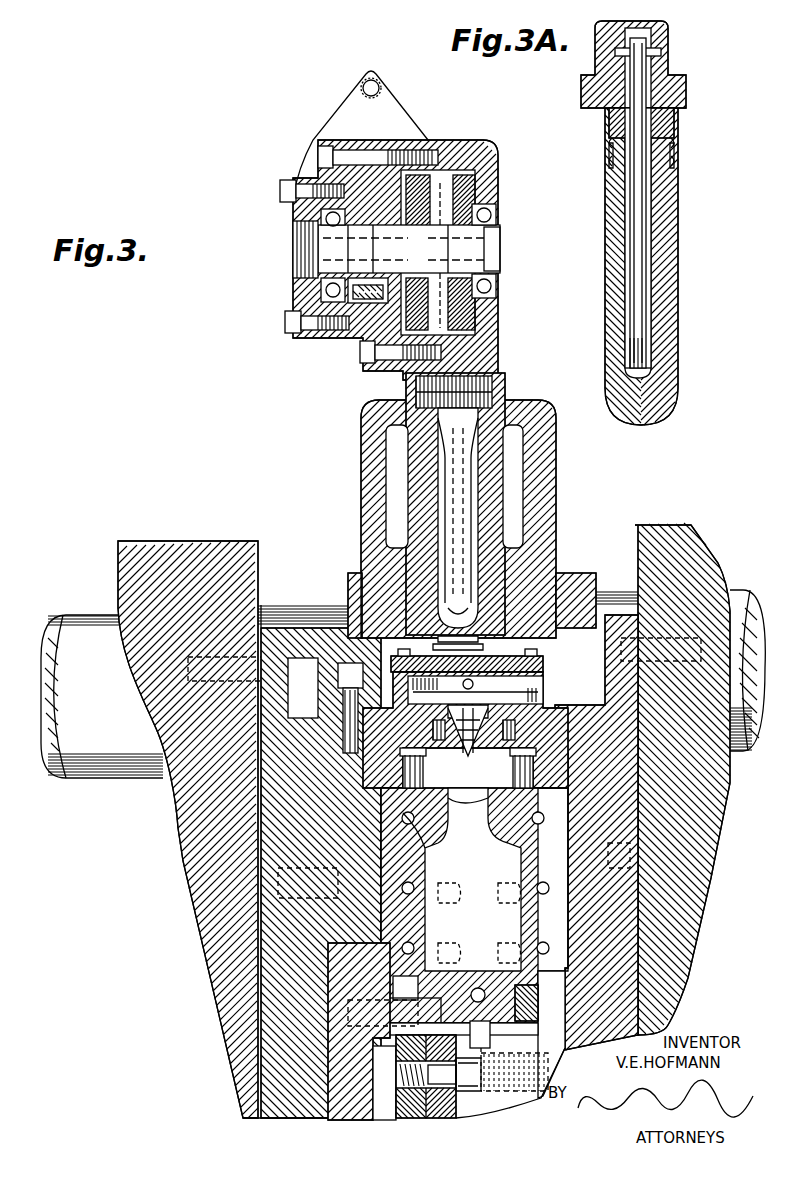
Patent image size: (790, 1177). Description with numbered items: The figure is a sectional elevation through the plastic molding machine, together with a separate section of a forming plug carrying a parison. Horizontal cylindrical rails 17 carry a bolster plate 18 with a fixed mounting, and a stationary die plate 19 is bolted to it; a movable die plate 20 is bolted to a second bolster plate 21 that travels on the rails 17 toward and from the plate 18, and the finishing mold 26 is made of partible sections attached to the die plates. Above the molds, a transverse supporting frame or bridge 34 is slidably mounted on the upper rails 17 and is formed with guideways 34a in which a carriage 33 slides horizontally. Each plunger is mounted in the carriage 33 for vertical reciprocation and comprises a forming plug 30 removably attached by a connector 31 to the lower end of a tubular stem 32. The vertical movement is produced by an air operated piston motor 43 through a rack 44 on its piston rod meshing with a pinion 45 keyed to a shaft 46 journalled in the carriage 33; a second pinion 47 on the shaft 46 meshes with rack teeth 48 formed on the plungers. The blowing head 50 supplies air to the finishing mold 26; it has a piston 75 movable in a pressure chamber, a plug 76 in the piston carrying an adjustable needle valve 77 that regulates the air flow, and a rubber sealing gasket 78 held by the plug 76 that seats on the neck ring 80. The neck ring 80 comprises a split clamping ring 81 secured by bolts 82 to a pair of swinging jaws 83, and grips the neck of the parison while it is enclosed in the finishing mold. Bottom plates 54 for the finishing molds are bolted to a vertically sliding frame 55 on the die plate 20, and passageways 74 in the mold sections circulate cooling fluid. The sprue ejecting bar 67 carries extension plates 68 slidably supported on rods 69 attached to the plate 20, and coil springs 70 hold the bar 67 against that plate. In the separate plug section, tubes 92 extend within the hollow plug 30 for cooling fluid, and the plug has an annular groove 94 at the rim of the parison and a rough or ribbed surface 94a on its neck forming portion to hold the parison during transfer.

In FIG. 3, the horizontal cylindrical rails 17 is at (72, 625).
In FIG. 3, the bolster plate 18 is at (700, 866).
In FIG. 3, the stationary die plate 19 is at (623, 817).
In FIG. 3, the movable die plate 20 is at (285, 805).
In FIG. 3, the bolster plate 21 is at (180, 790).
In FIG. 3, the finishing mold 26 is at (412, 910).
In FIG. 3, the forming plug 30 is at (450, 608).
In FIG. 3A, the forming plug 30 is at (648, 245).
In FIG. 3A, the connector 31 is at (652, 26).
In FIG. 3, the tubular stem 32 is at (492, 375).
In FIG. 3, the carriage 33 is at (440, 138).
In FIG. 3, the transverse supporting frame 34 is at (490, 519).
In FIG. 3, the guideways 34a is at (550, 585).
In FIG. 3, the air operated piston motor 43 is at (292, 155).
In FIG. 3, the rack 44 is at (335, 200).
In FIG. 3, the pinion 45 is at (358, 292).
In FIG. 3, the shaft 46 is at (482, 240).
In FIG. 3, the second pinion 47 is at (458, 192).
In FIG. 3, the rack teeth 48 is at (425, 640).
In FIG. 3, the blowing head 50 is at (535, 661).
In FIG. 3, the bottom plates 54 is at (495, 1005).
In FIG. 3, the frame 55 is at (342, 1103).
In FIG. 3, the horizontal bar 67 is at (402, 1110).
In FIG. 3, the plates 68 is at (442, 1110).
In FIG. 3, the rods 69 is at (528, 1083).
In FIG. 3, the coil springs 70 is at (495, 1085).
In FIG. 3, the passageways 74 is at (395, 810).
In FIG. 3, the piston 75 is at (512, 690).
In FIG. 3, the plug 76 is at (470, 742).
In FIG. 3, the needle valve 77 is at (456, 748).
In FIG. 3, the sealing gasket 78 is at (503, 728).
In FIG. 3, the neck ring 80 is at (393, 762).
In FIG. 3, the split clamping ring 81 is at (425, 770).
In FIG. 3, the bolts 82 is at (520, 755).
In FIG. 3, the jaws 83 is at (482, 790).
In FIG. 3A, the tubes 92 is at (637, 302).
In FIG. 3, the annular groove 94 is at (425, 425).
In FIG. 3A, the annular groove 94 is at (662, 108).
In FIG. 3A, the rough or ribbed surface 94a is at (652, 145).